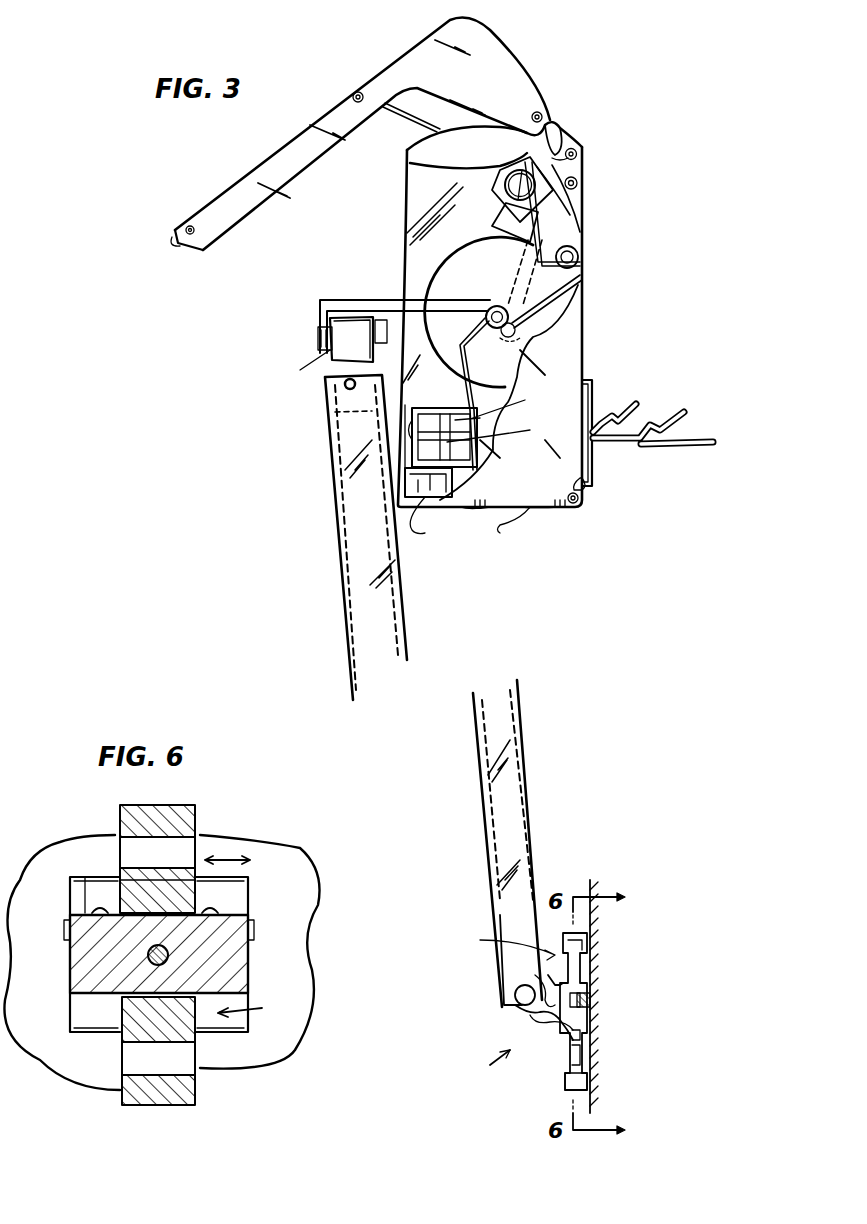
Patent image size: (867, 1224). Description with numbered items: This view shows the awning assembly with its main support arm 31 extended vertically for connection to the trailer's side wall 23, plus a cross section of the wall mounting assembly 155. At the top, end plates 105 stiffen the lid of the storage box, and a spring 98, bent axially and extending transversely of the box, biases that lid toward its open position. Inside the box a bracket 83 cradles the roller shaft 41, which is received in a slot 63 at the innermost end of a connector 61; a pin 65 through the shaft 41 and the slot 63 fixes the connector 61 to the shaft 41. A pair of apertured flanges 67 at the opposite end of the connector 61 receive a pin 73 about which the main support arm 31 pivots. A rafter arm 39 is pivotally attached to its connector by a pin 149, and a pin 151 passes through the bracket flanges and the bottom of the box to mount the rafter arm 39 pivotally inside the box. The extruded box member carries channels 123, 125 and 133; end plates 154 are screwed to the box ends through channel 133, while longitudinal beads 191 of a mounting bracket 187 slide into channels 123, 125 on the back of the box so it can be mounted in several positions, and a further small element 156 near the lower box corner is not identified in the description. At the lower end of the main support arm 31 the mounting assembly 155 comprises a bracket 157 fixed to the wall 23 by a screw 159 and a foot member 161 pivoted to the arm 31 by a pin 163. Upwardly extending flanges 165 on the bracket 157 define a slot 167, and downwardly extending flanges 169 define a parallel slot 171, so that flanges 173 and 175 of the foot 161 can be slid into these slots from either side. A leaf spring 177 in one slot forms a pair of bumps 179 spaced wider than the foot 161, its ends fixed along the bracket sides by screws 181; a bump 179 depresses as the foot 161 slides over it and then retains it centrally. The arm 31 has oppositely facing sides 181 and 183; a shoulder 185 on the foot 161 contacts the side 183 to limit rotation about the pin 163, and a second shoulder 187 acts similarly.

In FIG. 3, the end plates 105 is at (503, 60).
In FIG. 3, the spring 98 is at (395, 120).
In FIG. 3, the bracket 157 is at (588, 158).
In FIG. 6, the bracket 157 is at (240, 968).
In FIG. 3, the bracket 83 is at (480, 372).
In FIG. 3, the pin 65 is at (505, 280).
In FIG. 3, the slot 63 is at (523, 328).
In FIG. 3, the shaft 41 is at (486, 318).
In FIG. 3, the connector 61 is at (378, 298).
In FIG. 3, the pin 73 is at (318, 337).
In FIG. 3, the apertured flanges 67 is at (320, 365).
In FIG. 3, the main support arm 31 is at (515, 777).
In FIG. 3, the side 183 is at (532, 822).
In FIG. 3, the rafter arm 39 is at (418, 408).
In FIG. 3, the pin 151 is at (505, 398).
In FIG. 3, the pin 149 is at (496, 429).
In FIG. 3, the channel 133 is at (429, 509).
In FIG. 3, the end plates 154 is at (512, 522).
In FIG. 3, the channel 125 is at (575, 478).
In FIG. 3, the channel 123 is at (575, 400).
In FIG. 3, the longitudinal beads 191 is at (585, 352).
In FIG. 3, the screw 156 is at (582, 500).
In FIG. 3, the bracket 187 is at (634, 385).
In FIG. 3, the side wall 23 is at (580, 880).
In FIG. 6, the side wall 23 is at (315, 915).
In FIG. 3, the flanges 165 is at (585, 975).
In FIG. 6, the flanges 165 is at (245, 902).
In FIG. 3, the flange 173 is at (590, 985).
In FIG. 6, the flange 173 is at (185, 828).
In FIG. 3, the screw 159 is at (592, 1002).
In FIG. 6, the screw 159 is at (148, 957).
In FIG. 3, the flange 175 is at (592, 1038).
In FIG. 6, the flange 175 is at (128, 1090).
In FIG. 3, the flanges 169 is at (592, 1058).
In FIG. 6, the flanges 169 is at (228, 1040).
In FIG. 3, the slot 171 is at (592, 1083).
In FIG. 6, the slot 171 is at (256, 1000).
In FIG. 3, the pin 163 is at (515, 1005).
In FIG. 3, the foot member 161 is at (548, 1045).
In FIG. 3, the shoulder 185 is at (538, 978).
In FIG. 3, the screws 181 is at (497, 980).
In FIG. 6, the screws 181 is at (70, 920).
In FIG. 3, the slot 167 is at (499, 939).
In FIG. 6, the slot 167 is at (250, 870).
In FIG. 3, the mounting assembly 155 is at (479, 1076).
In FIG. 6, the bumps 179 is at (100, 908).
In FIG. 6, the leaf spring 177 is at (92, 900).